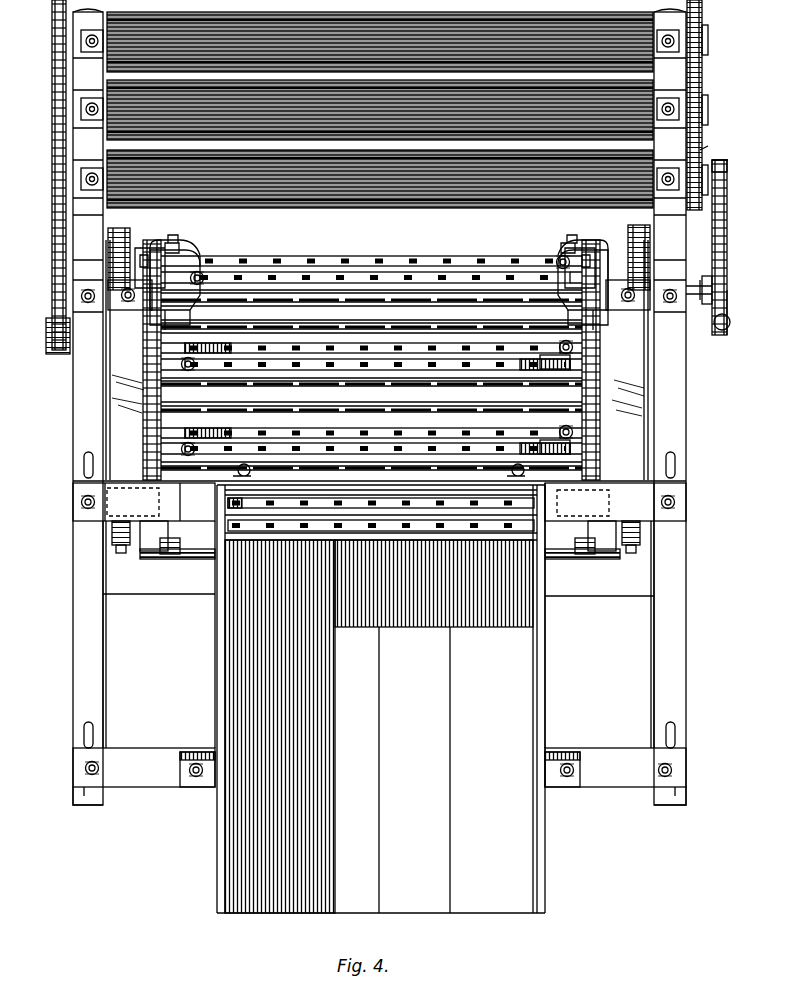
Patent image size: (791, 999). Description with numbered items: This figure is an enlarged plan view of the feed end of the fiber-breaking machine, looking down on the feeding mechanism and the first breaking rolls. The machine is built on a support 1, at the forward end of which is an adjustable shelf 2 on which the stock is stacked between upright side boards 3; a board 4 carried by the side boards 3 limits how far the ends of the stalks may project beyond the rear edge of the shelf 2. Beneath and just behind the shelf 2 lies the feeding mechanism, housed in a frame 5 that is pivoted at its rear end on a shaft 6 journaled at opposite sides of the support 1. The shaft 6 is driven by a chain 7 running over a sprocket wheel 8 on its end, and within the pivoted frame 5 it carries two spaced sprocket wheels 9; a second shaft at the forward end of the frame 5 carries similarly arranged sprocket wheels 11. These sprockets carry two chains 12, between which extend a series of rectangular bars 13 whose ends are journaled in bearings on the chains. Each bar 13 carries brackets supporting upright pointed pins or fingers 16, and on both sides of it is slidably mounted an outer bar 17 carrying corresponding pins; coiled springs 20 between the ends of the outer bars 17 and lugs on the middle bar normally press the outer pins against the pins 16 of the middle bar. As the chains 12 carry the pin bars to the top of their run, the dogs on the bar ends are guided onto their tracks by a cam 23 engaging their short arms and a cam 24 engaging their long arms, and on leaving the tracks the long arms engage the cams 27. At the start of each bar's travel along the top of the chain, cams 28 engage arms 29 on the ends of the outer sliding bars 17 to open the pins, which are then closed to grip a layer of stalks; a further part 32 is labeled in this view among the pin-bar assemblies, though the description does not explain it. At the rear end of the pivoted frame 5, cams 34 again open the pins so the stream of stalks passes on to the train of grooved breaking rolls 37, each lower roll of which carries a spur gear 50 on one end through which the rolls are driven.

The support 1 is at (88, 440).
The adjustable shelf 2 is at (381, 726).
The upright boards 3 is at (222, 718).
The board 4 is at (440, 486).
The frame 5 is at (118, 385).
The shaft 6 is at (692, 298).
The chain 7 is at (722, 222).
The sprocket wheel 8 is at (727, 322).
The sprocket wheels 9 is at (178, 244).
The sprocket wheels 11 is at (170, 560).
The chains 12 is at (150, 404).
The bars 13 is at (195, 357).
The pins or fingers 16 is at (410, 356).
The bar or rod 17 is at (300, 358).
The coiled springs 20 is at (562, 368).
The cam 23 is at (122, 548).
The cam 24 is at (100, 530).
The cams 27 is at (128, 245).
The cams 28 is at (175, 556).
The arms 29 is at (196, 528).
The rail 32 is at (432, 364).
The cams 34 is at (379, 285).
The grooved rolls 37 is at (700, 24).
The spur gear 50 is at (705, 165).